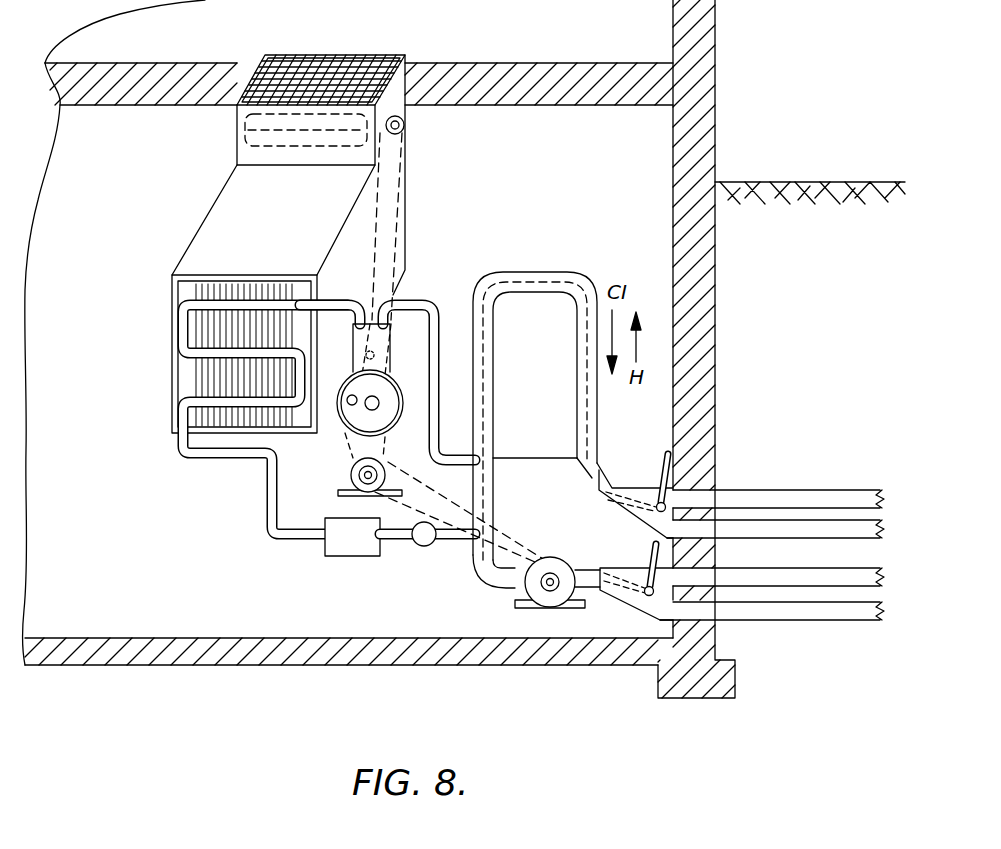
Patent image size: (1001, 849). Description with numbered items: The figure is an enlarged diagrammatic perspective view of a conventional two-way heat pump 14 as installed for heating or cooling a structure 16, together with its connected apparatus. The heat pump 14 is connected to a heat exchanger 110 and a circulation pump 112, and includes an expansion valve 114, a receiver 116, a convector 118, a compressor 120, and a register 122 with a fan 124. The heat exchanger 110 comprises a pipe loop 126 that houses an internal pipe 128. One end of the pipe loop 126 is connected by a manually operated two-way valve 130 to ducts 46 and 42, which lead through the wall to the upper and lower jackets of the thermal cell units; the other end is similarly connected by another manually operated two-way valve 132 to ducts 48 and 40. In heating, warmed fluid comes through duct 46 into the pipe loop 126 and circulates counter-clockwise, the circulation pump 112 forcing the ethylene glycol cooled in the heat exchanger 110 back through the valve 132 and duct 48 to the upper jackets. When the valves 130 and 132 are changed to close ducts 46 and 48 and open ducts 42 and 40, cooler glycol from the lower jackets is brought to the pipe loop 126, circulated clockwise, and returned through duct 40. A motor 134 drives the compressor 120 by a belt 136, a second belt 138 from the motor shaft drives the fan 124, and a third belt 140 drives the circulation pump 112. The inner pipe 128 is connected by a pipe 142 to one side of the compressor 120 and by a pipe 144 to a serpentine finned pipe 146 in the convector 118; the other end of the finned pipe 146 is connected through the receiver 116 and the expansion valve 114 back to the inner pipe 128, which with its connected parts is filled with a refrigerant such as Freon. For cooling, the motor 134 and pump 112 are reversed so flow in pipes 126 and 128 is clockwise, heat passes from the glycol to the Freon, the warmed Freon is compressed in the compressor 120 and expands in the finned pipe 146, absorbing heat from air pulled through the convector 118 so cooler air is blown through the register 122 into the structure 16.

The heat pump 14 is at (500, 197).
The structure 16 is at (718, 112).
The duct 40 is at (840, 615).
The duct 42 is at (843, 520).
The duct 46 is at (760, 495).
The duct 48 is at (767, 583).
The heat exchanger 110 is at (588, 262).
The circulation pump 112 is at (570, 520).
The expansion valve 114 is at (423, 548).
The receiver 116 is at (356, 560).
The convector 118 is at (213, 220).
The compressor 120 is at (392, 372).
The register 122 is at (379, 55).
The fan 124 is at (255, 140).
The pipe loop 126 is at (572, 242).
The internal pipe 128 is at (483, 352).
The two-way valve 130 is at (660, 472).
The two-way valve 132 is at (650, 562).
The motor 134 is at (350, 478).
The belt 136 is at (461, 512).
The second belt 138 is at (400, 205).
The third belt 140 is at (537, 502).
The pipe 142 is at (441, 322).
The pipe 144 is at (343, 300).
The serpentine finned pipe 146 is at (195, 370).